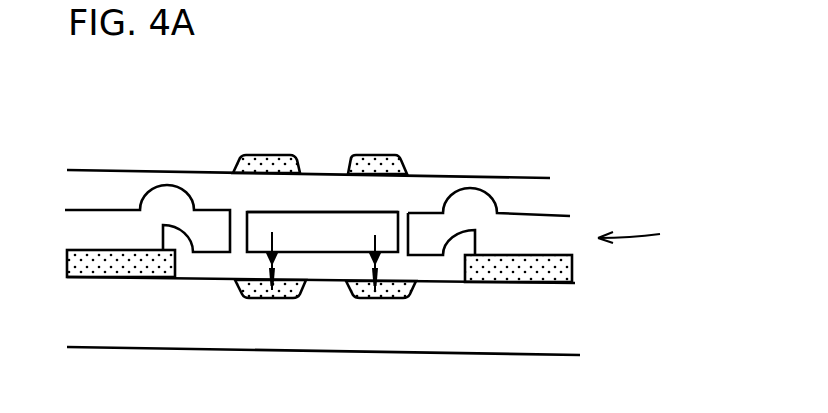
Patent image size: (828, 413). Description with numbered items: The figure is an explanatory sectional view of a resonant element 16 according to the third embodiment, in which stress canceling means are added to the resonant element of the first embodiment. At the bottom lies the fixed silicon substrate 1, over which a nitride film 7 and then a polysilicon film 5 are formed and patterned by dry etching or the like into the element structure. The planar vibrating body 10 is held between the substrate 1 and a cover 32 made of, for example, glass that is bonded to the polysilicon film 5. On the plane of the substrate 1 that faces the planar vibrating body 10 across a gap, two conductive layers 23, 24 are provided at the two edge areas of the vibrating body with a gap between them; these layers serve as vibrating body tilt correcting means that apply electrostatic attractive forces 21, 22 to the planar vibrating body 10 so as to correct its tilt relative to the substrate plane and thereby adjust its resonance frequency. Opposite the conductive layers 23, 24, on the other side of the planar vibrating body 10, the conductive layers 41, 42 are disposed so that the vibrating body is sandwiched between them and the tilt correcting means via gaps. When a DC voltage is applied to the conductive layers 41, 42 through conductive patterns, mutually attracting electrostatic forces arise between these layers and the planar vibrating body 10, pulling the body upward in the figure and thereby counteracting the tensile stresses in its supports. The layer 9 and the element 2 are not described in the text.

The silicon substrate 1 is at (528, 340).
The semiconductor element 2 is at (372, 226).
The polysilicon film 5 is at (528, 228).
The nitride film 7 is at (547, 273).
The insulating layer 9 is at (337, 267).
The planar vibrating body 10 is at (312, 222).
The resonant element 16 is at (643, 232).
The electrostatic attractive force 21 is at (272, 236).
The electrostatic attractive force 22 is at (376, 238).
The conductive layer 23 is at (257, 297).
The conductive layer 24 is at (396, 293).
The cover 32 is at (523, 172).
The conductive layer 41 is at (253, 155).
The conductive layer 42 is at (387, 160).